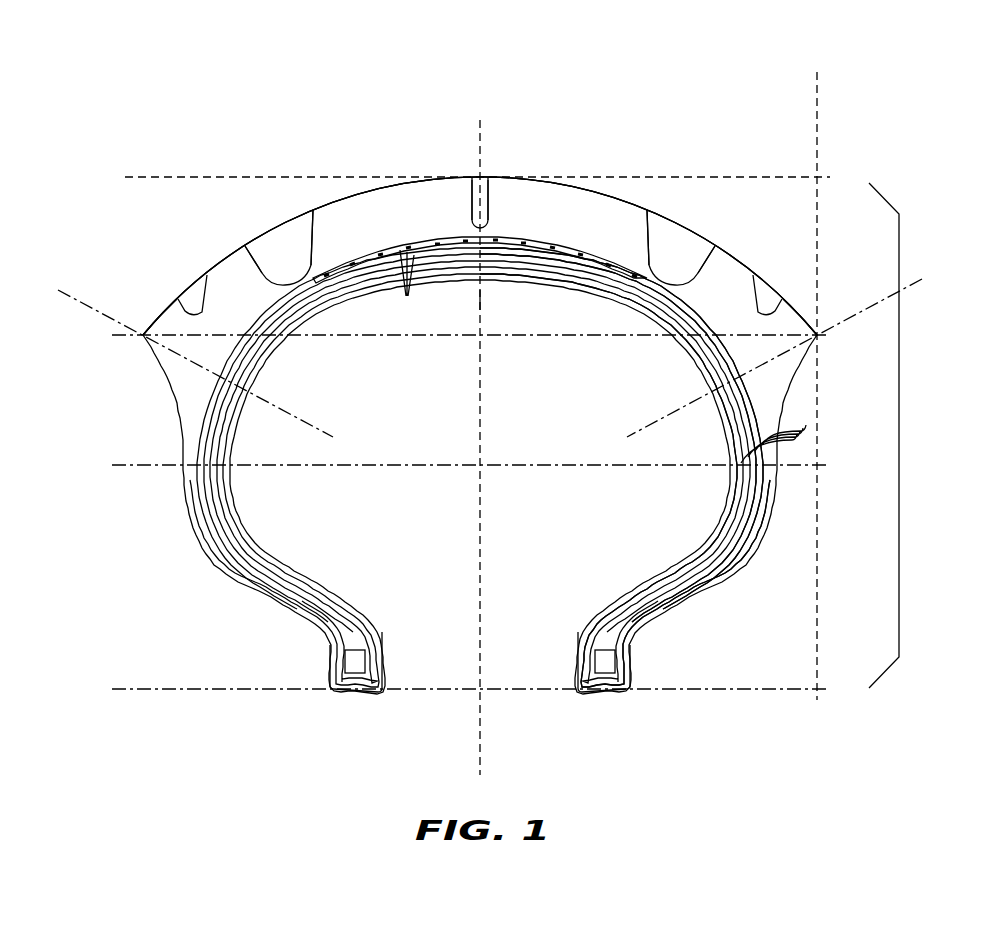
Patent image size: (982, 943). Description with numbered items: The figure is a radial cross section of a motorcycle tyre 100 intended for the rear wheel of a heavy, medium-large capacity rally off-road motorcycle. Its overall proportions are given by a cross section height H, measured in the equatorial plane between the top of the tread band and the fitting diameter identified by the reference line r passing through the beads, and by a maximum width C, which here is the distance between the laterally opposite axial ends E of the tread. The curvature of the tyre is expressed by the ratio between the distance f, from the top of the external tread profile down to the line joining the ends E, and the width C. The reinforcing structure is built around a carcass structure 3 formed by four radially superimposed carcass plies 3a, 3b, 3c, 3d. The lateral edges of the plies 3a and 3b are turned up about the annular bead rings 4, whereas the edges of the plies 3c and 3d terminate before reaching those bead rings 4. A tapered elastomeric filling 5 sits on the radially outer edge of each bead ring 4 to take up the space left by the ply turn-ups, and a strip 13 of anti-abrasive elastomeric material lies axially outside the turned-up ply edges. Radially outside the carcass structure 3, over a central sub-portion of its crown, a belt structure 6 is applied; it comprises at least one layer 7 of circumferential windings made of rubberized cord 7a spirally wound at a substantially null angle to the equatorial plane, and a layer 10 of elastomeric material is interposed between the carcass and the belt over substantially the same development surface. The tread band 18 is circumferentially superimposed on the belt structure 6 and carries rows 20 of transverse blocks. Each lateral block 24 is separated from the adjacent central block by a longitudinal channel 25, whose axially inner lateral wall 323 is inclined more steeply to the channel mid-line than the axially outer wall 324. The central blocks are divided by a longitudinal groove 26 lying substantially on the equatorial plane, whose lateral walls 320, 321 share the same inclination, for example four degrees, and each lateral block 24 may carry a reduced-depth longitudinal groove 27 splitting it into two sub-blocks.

The motorcycle tyre 100 is at (678, 87).
The rows of transverse blocks 20 is at (427, 172).
The tread band 18 is at (228, 272).
The lateral block 24 is at (167, 306).
The longitudinal channel 25 is at (297, 226).
The axially outer wall 324 is at (257, 240).
The axially inner lateral wall 323 is at (316, 238).
The longitudinal groove 27 is at (188, 298).
The longitudinal groove 26 is at (488, 203).
The lateral wall 321 is at (472, 217).
The lateral wall 320 is at (489, 217).
The layer 7 is at (385, 248).
The rubberized cord 7a is at (480, 283).
The layer of elastomeric material 10 is at (573, 266).
The belt structure 6 is at (586, 240).
The carcass structure 3 is at (643, 480).
The carcass ply 3a is at (742, 547).
The carcass ply 3b is at (635, 633).
The carcass ply 3c is at (740, 521).
The carcass ply 3d is at (709, 565).
The strip 13 is at (663, 612).
The tapered elastomeric filling 5 is at (604, 665).
The bead rings 4 is at (614, 690).
The maximum width C is at (495, 447).
The axial ends of the tread E is at (478, 353).
The distance f is at (487, 296).
The reference line r is at (256, 690).
The cross section height H is at (899, 440).